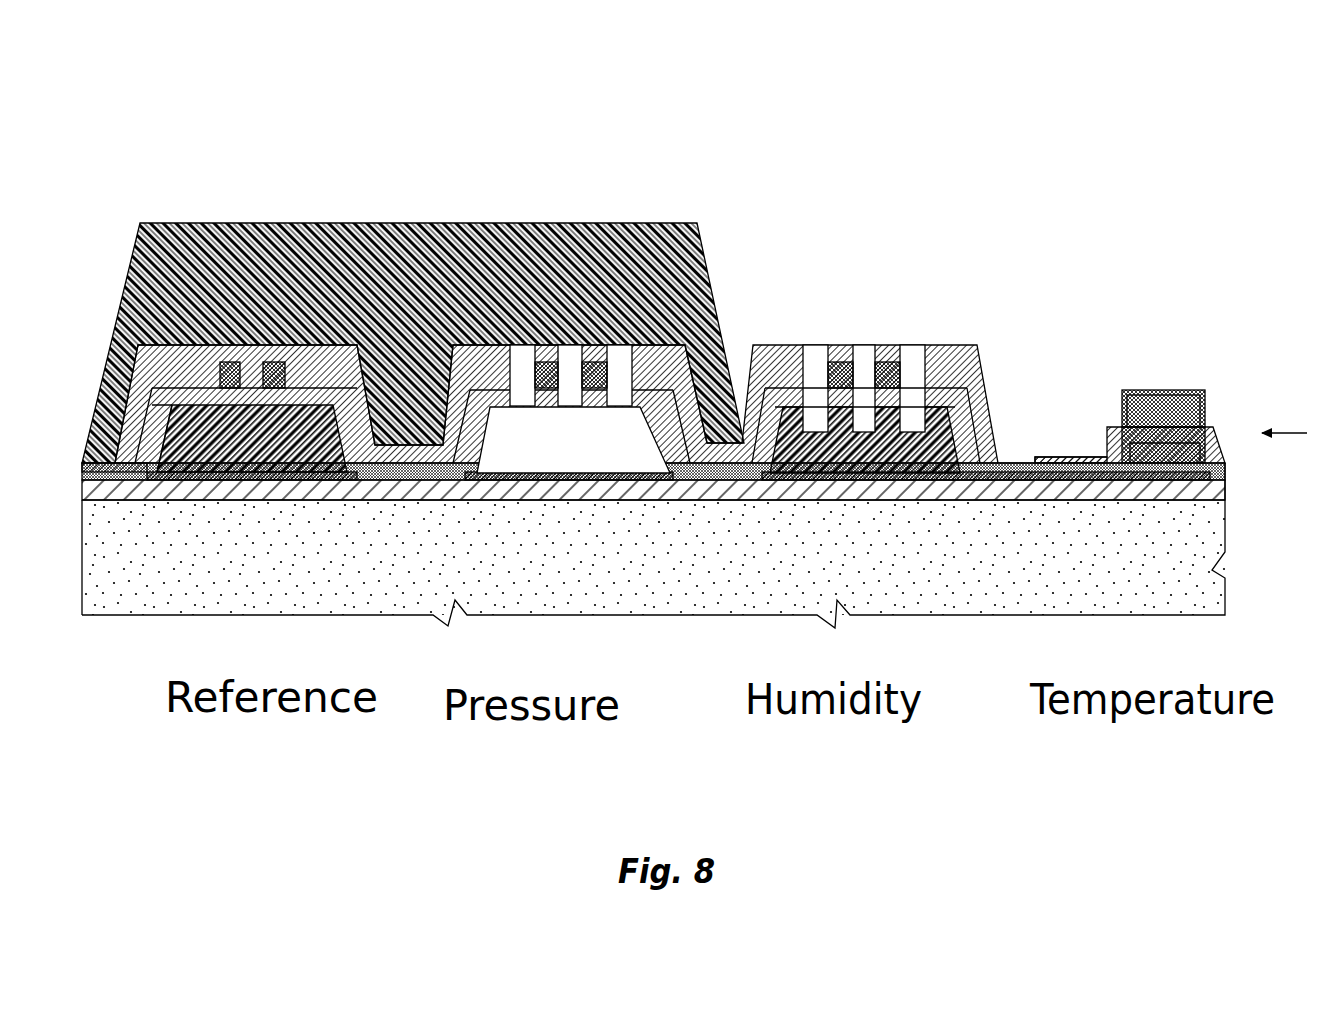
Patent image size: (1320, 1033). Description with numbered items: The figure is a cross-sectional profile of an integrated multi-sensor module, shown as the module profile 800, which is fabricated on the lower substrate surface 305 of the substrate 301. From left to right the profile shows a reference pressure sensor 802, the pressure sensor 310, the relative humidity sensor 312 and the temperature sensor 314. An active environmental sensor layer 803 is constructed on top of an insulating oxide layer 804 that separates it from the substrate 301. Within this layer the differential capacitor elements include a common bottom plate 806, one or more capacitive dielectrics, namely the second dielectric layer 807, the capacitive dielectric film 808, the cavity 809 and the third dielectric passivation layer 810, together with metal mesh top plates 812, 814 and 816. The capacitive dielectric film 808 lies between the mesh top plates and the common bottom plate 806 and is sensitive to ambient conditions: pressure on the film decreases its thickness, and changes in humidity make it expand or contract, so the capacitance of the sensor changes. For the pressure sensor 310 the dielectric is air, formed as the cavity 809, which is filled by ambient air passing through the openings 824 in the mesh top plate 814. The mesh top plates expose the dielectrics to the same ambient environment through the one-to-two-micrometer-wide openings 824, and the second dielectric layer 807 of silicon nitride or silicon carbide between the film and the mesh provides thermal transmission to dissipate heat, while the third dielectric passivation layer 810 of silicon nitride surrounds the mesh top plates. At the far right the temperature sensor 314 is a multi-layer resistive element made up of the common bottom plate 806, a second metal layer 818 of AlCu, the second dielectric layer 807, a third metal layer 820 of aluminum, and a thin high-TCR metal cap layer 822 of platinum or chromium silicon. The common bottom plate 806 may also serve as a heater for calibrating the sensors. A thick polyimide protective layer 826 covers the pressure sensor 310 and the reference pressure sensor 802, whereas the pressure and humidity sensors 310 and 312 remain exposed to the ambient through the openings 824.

The module profile 800 is at (980, 84).
The substrate 301 is at (133, 605).
The lower substrate surface 305 is at (503, 492).
The pressure sensor 310 is at (568, 201).
The relative humidity sensor 312 is at (862, 241).
The temperature sensor 314 is at (1157, 353).
The reference pressure sensor 802 is at (254, 198).
The active environmental sensor layer 803 is at (1289, 449).
The insulating oxide layer 804 is at (83, 486).
The common bottom plate 806 is at (208, 474).
The second dielectric layer 807 is at (83, 468).
The capacitive dielectric film 808 is at (295, 445).
The cavity 809 is at (648, 466).
The third dielectric passivation layer 810 is at (982, 356).
The metal mesh top plate 812 is at (224, 362).
The metal mesh top plate 814 is at (537, 373).
The metal mesh top plate 816 is at (860, 352).
The second metal layer 818 is at (1163, 457).
The third metal layer 820 is at (1140, 390).
The metal cap layer 822 is at (1123, 392).
The openings 824 is at (617, 360).
The polyimide protective layer 826 is at (702, 243).